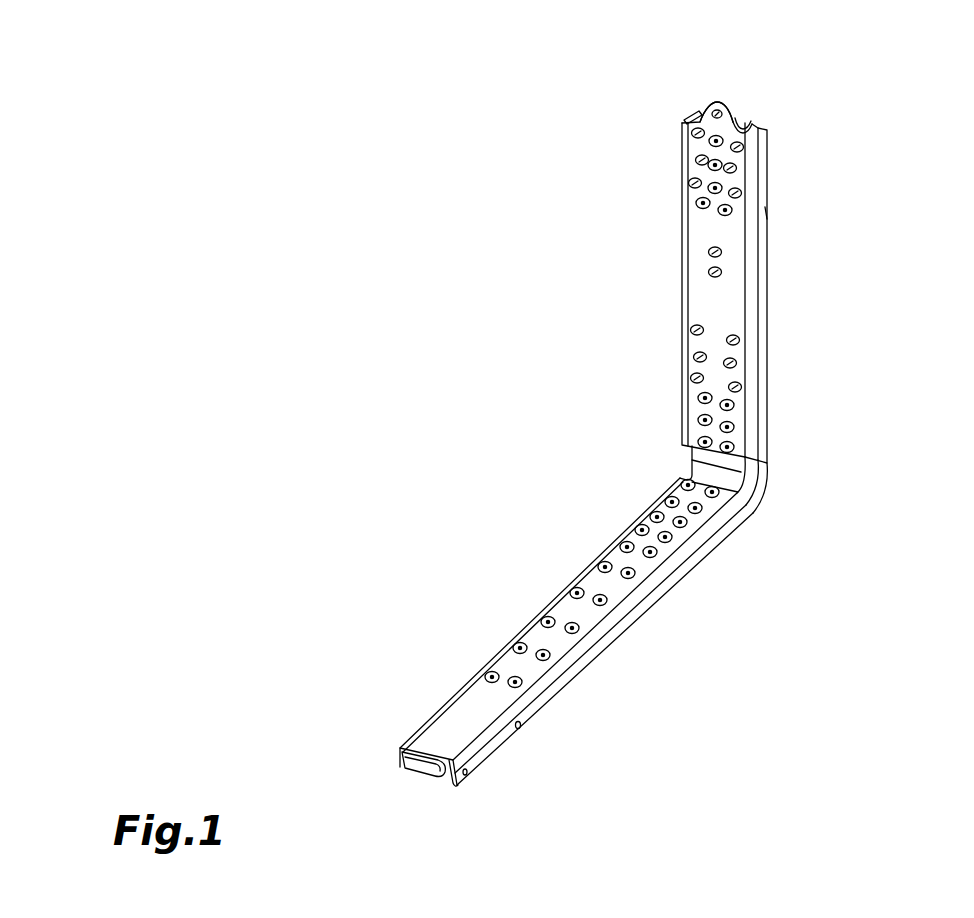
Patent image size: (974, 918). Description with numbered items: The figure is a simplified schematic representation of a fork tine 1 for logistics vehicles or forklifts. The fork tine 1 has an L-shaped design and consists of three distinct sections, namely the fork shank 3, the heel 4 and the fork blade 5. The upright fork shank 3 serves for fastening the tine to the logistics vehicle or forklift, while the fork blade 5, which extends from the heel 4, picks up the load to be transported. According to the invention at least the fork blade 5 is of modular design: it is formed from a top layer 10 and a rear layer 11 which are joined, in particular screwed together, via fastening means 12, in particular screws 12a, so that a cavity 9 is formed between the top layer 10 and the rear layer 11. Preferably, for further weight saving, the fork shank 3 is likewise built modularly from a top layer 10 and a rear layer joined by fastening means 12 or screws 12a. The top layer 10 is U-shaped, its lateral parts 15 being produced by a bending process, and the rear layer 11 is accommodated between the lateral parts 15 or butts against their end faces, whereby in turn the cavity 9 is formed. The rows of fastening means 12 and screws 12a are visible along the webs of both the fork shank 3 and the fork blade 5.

The fork tine 1 is at (400, 195).
The fork shank 3 is at (760, 287).
The heel 4 is at (725, 477).
The fork blade 5 is at (612, 610).
The cavity 9 is at (750, 108).
The top layer 10 is at (716, 300).
The rear layer 11 is at (755, 123).
The fastening means 12 is at (748, 169).
The screws 12a is at (712, 143).
The lateral parts 15 is at (690, 114).